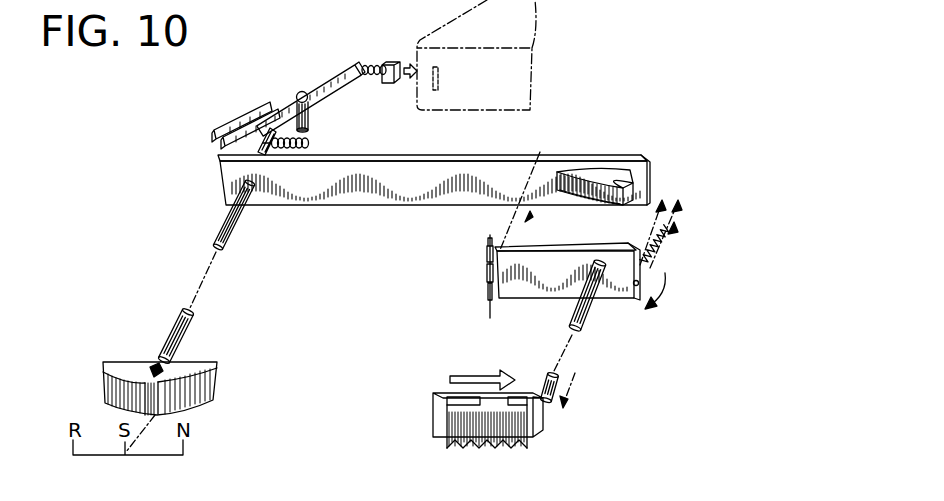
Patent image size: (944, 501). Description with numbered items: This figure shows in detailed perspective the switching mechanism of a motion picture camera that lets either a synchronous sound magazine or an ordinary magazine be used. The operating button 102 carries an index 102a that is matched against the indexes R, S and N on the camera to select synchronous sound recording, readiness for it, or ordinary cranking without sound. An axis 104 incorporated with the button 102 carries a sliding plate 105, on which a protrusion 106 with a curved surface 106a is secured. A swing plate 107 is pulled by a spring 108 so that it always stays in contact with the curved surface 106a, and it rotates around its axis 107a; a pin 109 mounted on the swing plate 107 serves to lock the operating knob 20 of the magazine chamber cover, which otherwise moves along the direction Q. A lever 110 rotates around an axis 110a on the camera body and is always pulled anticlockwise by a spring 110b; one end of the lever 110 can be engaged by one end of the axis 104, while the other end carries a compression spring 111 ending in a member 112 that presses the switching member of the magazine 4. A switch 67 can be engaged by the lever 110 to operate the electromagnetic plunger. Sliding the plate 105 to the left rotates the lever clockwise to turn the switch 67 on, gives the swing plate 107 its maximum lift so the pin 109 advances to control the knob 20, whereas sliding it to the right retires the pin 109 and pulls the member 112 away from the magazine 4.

The magazine 4 is at (515, 62).
The operating knob 20 is at (493, 440).
The switch 67 is at (263, 103).
The operating button 102 is at (203, 382).
The index 102a is at (150, 373).
The axis 104 is at (236, 232).
The sliding plate 105 is at (323, 188).
The protrusion 106 is at (609, 176).
The curved surface 106a is at (588, 192).
The swing plate 107 is at (519, 297).
The axis 107a is at (488, 283).
The spring 108 is at (668, 240).
The pin 109 is at (597, 300).
The lever 110 is at (335, 88).
The axis 110a is at (297, 127).
The spring 110b is at (308, 140).
The compression spring 111 is at (370, 68).
The member 112 is at (393, 83).